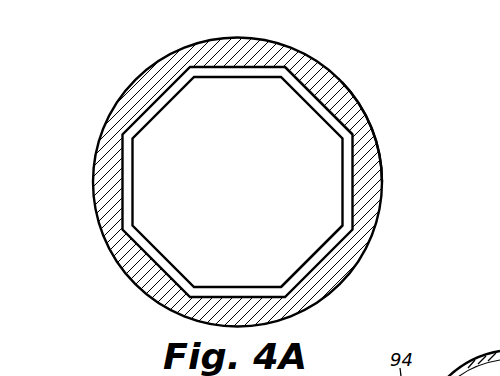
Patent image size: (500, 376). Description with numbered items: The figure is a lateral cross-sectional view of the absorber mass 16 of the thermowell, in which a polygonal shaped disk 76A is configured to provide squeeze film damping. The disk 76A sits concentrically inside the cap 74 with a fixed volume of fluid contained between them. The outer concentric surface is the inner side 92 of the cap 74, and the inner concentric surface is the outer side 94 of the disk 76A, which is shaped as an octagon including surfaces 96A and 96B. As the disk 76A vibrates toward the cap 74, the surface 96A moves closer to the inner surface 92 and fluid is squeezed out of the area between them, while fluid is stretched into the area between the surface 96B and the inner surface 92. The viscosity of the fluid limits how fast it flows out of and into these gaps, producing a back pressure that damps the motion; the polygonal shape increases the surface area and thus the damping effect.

The absorber mass 16 is at (395, 120).
The cap 74 is at (370, 173).
The polygonal shaped disk 76A is at (229, 178).
The inner side of cap 92 is at (340, 250).
The outer side of disk 94 is at (303, 85).
The surface of octagon 96A is at (342, 203).
The surface of octagon 96B is at (133, 173).